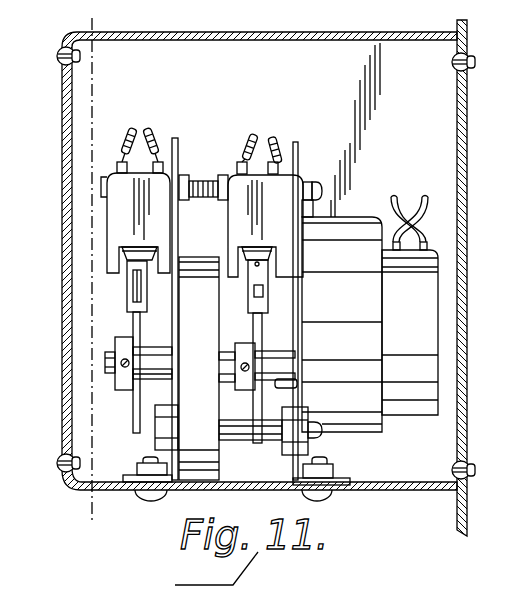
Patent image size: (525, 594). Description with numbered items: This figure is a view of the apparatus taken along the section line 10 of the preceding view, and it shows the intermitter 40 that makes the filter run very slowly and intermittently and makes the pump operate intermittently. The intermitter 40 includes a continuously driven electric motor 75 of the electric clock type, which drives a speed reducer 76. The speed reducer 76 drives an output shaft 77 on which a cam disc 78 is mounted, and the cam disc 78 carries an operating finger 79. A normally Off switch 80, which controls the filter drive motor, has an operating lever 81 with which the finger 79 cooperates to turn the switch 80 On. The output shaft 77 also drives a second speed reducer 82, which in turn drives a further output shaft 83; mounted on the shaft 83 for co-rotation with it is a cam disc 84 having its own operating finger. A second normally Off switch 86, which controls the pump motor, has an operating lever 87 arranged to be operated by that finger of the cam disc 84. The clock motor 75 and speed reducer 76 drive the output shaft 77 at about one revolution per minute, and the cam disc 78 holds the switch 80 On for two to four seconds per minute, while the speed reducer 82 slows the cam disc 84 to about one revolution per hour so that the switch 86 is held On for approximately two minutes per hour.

The section line 10 is at (92, 18).
The intermitter 40 is at (74, 492).
The electric motor 75 is at (405, 408).
The speed reducer 76 is at (353, 437).
The output shaft 77 is at (286, 383).
The cam disc 78 is at (261, 338).
The operating finger 79 is at (263, 290).
The switch 80 is at (284, 198).
The operating lever 81 is at (260, 272).
The speed reducer 82 is at (208, 345).
The output shaft 83 is at (158, 378).
The cam disc 84 is at (132, 327).
The switch 86 is at (112, 220).
The operating lever 87 is at (127, 293).